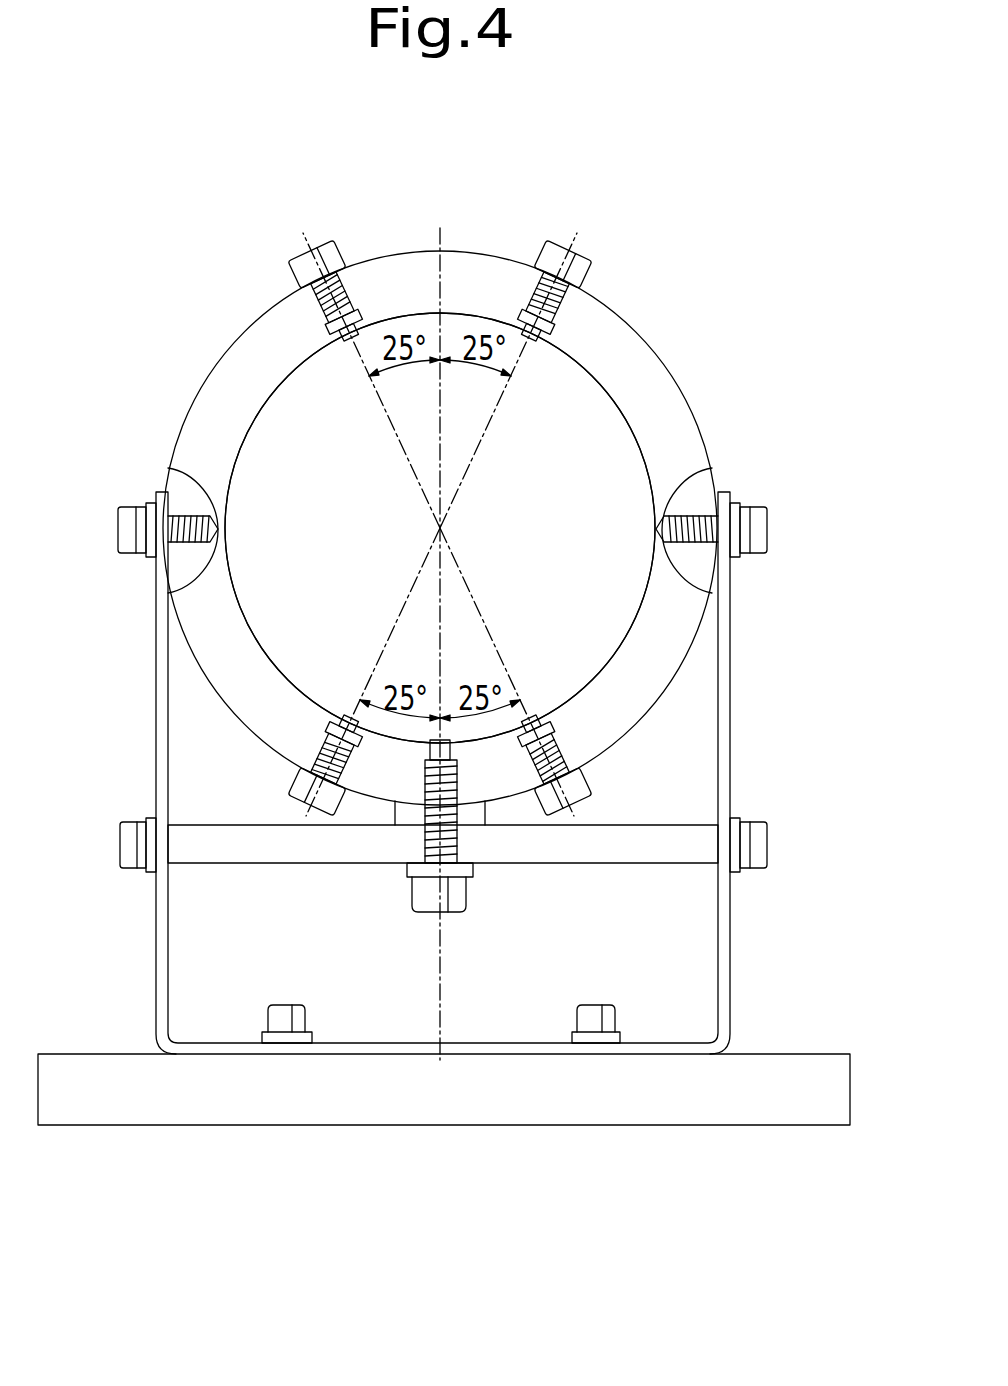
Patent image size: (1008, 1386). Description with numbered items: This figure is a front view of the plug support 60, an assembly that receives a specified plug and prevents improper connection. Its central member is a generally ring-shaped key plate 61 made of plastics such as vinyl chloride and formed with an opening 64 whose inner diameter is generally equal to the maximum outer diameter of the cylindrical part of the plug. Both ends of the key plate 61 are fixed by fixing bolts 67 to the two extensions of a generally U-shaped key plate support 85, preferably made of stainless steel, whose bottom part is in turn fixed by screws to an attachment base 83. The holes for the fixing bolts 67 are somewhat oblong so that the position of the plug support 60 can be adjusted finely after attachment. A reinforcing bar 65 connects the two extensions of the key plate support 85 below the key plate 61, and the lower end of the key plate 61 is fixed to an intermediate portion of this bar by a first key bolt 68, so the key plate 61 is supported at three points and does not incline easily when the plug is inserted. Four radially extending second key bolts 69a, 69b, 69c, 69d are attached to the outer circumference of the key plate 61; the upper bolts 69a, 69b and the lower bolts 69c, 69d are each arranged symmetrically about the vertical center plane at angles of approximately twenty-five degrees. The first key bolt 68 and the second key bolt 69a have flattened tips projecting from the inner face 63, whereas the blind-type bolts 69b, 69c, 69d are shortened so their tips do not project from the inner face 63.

The plug support 60 is at (727, 292).
The key plate 61 is at (683, 403).
The inner face 63 is at (296, 392).
The opening 64 is at (562, 491).
The reinforcing bar 65 is at (603, 845).
The fixing bolts 67 is at (130, 508).
The first key bolt 68 is at (462, 908).
The second key bolt 69a is at (337, 248).
The second key bolt 69b is at (534, 250).
The second key bolt 69c is at (300, 785).
The second key bolt 69d is at (590, 785).
The attachment base 83 is at (738, 1090).
The key plate support 85 is at (731, 988).